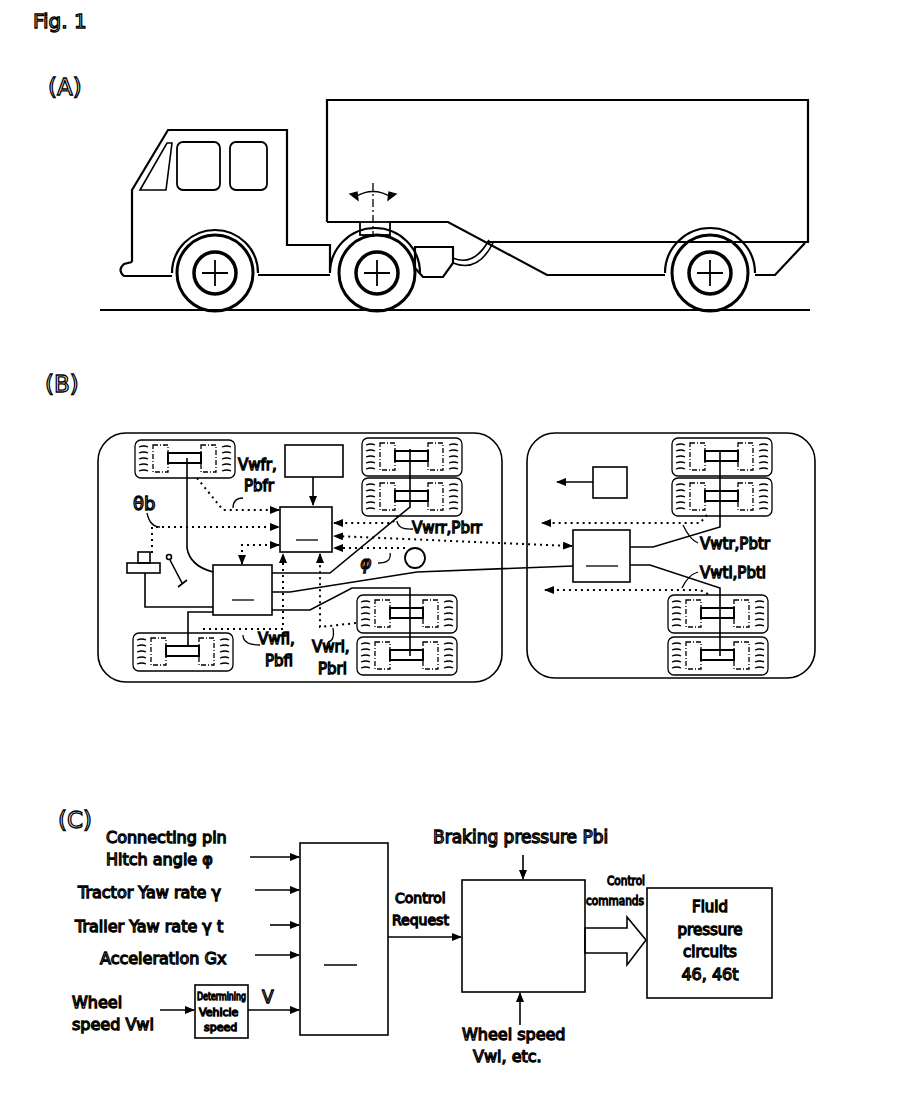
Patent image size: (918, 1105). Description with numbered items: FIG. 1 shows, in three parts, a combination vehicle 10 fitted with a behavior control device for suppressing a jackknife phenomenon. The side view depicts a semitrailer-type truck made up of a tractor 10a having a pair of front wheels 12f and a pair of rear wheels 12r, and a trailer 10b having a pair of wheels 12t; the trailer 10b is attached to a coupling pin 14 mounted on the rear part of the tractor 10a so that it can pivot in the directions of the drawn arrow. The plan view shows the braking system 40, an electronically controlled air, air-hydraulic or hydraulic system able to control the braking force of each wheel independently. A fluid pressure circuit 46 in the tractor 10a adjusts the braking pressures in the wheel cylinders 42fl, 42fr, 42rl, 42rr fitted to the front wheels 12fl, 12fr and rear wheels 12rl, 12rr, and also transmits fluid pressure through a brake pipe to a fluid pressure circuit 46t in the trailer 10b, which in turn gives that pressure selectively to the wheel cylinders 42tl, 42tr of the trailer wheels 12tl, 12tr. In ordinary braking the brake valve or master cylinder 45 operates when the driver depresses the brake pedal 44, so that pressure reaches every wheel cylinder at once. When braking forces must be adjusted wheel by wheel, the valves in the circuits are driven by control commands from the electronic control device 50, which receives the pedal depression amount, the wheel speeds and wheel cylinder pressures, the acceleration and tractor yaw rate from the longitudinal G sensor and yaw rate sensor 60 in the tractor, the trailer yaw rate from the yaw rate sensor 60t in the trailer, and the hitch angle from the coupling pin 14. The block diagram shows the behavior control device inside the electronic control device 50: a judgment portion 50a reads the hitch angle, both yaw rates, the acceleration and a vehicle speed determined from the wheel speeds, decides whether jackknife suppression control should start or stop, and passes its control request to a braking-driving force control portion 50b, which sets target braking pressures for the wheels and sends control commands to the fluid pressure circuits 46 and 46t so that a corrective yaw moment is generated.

The vehicle 10 is at (136, 160).
The tractor 10a is at (188, 224).
The trailer 10b is at (601, 182).
The front wheels 12f is at (180, 296).
The rear wheels 12r is at (346, 296).
The trailer wheels 12t is at (678, 296).
The coupling pin 14 is at (358, 233).
The tractor front right wheel 12fr is at (132, 451).
The tractor front left wheel 12fl is at (133, 656).
The tractor rear right wheel 12rr is at (456, 434).
The tractor rear left wheel 12rl is at (460, 660).
The trailer right wheel 12tr is at (768, 434).
The trailer left wheel 12tl is at (770, 660).
The wheel cylinder 42fr is at (187, 458).
The wheel cylinder 42fl is at (185, 665).
The wheel cylinder 42rr is at (410, 446).
The wheel cylinder 42rl is at (408, 665).
The wheel cylinder 42tr is at (720, 446).
The wheel cylinder 42tl is at (717, 663).
The longitudinal G sensor and yaw rate sensor 60 is at (307, 445).
The yaw rate sensor 60t is at (612, 467).
The electronic control device 50 is at (572, 465).
The fluid pressure circuit 46 is at (393, 590).
The fluid pressure circuit 46t is at (601, 556).
The braking system 40 is at (128, 611).
The brake pedal 44 is at (181, 584).
The brake valve or master cylinder 45 is at (127, 570).
The judgment portion 50a is at (344, 939).
The braking-driving force control portion 50b is at (523, 936).